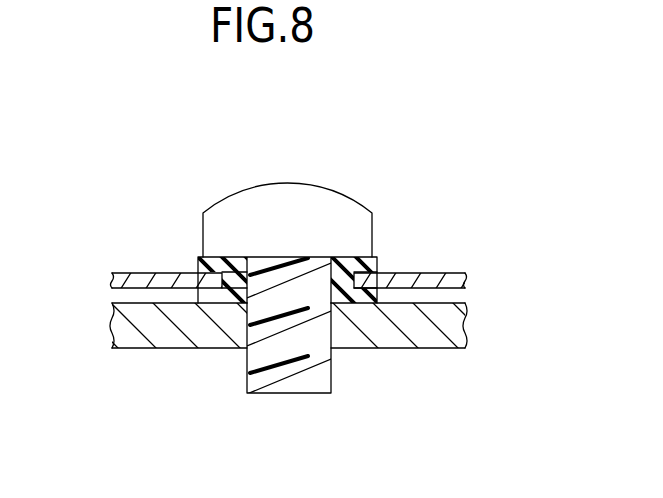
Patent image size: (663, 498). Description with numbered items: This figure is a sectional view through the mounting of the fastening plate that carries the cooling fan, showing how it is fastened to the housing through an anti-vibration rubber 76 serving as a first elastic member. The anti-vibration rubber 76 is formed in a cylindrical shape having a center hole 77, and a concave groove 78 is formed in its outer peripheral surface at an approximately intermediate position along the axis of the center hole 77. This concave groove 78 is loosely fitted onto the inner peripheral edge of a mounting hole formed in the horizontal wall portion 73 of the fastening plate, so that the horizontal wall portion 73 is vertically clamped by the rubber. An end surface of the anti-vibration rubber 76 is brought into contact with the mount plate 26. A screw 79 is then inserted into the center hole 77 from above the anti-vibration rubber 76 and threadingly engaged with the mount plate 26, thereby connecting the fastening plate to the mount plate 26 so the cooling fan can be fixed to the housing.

The mount plate 26 is at (428, 340).
The horizontal wall portion 73 is at (453, 280).
The anti-vibration rubber 76 is at (228, 273).
The center hole 77 is at (247, 290).
The concave groove 78 is at (368, 281).
The screw 79 is at (337, 207).